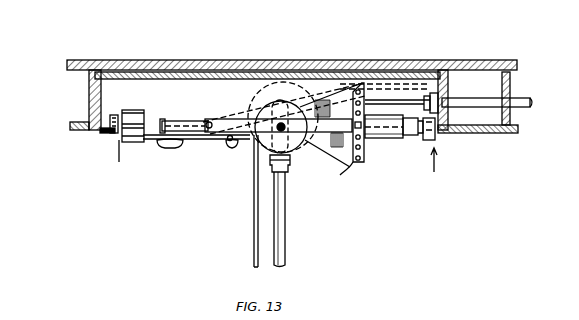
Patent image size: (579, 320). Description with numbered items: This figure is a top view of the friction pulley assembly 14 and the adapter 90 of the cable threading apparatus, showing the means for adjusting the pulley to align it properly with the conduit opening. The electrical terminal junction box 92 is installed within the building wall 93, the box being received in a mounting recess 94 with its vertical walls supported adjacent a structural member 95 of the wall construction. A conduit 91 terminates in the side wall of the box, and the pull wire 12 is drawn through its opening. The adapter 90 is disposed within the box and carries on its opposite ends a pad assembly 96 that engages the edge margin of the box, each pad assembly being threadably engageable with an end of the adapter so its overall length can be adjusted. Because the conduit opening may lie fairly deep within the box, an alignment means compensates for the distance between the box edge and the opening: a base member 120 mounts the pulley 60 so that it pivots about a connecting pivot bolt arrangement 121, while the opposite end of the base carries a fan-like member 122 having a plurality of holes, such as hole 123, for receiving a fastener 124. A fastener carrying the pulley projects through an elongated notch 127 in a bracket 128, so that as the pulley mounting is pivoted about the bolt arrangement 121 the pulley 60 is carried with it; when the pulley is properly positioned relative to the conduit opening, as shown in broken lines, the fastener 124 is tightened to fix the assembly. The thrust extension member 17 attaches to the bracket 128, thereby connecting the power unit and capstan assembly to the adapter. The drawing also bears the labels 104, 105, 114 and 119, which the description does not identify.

The pull wire 12 is at (422, 100).
The friction pulley assembly 14 is at (279, 148).
The thrust extension member 17 is at (284, 208).
The pulley 60 is at (262, 58).
The adapter 90 is at (180, 194).
The conduit 91 is at (510, 80).
The terminal box 92 is at (100, 132).
The wall 93 is at (488, 133).
The mounting recess 94 is at (400, 76).
The structural member 95 is at (88, 90).
The pad assembly 96 is at (110, 137).
The cam follower bar 104 is at (177, 149).
The lever 105 is at (187, 317).
The link 114 is at (134, 313).
The pin 119 is at (158, 313).
The base member 120 is at (222, 145).
The connecting pivot bolt arrangement 121 is at (204, 140).
The fan-like member 122 is at (340, 175).
The hole 123 is at (360, 152).
The fastener 124 is at (375, 139).
The elongated notch 127 is at (296, 152).
The bracket 128 is at (312, 90).